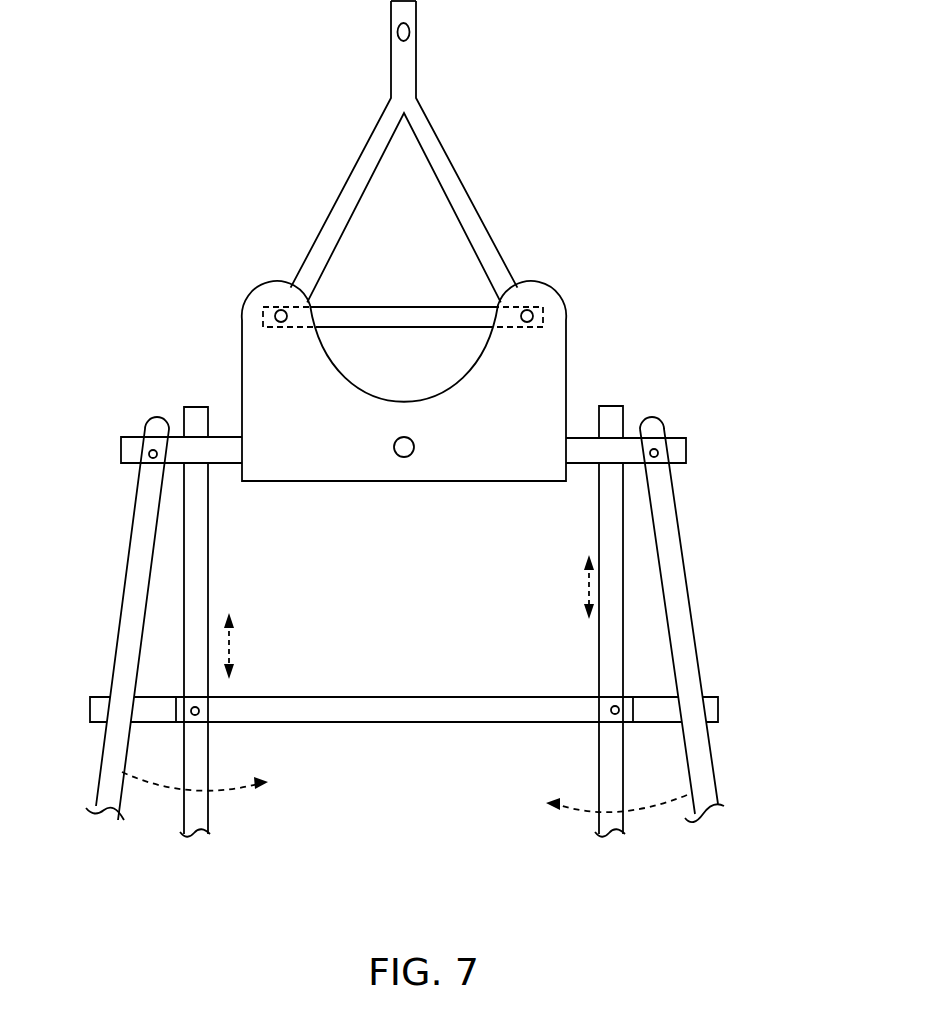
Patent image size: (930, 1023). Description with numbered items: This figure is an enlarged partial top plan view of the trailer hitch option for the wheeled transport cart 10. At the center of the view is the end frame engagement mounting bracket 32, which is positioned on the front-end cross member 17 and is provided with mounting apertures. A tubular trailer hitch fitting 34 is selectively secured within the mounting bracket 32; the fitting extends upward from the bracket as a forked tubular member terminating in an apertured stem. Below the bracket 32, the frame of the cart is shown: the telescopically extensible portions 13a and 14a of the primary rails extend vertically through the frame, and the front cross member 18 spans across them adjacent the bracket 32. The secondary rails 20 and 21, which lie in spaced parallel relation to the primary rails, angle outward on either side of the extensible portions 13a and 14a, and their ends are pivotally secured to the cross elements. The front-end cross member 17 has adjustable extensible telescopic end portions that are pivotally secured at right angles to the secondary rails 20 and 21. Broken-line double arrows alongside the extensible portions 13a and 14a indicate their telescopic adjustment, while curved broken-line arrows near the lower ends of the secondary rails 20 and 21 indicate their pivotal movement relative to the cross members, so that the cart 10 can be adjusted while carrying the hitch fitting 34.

The wheeled transport cart 10 is at (733, 311).
The telescopically extensible portion 13a is at (607, 652).
The telescopically extensible portion 14a is at (199, 603).
The front-end cross member 17 is at (522, 710).
The front cross member 18 is at (203, 448).
The secondary rail 20 is at (701, 657).
The secondary rail 21 is at (113, 640).
The end frame engagement mounting bracket 32 is at (553, 349).
The tubular trailer hitch fitting 34 is at (470, 197).